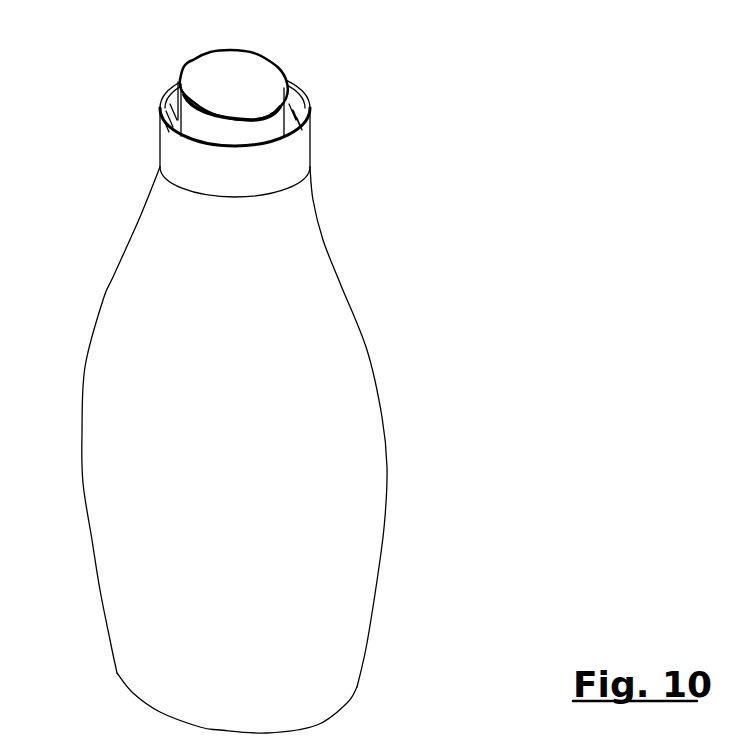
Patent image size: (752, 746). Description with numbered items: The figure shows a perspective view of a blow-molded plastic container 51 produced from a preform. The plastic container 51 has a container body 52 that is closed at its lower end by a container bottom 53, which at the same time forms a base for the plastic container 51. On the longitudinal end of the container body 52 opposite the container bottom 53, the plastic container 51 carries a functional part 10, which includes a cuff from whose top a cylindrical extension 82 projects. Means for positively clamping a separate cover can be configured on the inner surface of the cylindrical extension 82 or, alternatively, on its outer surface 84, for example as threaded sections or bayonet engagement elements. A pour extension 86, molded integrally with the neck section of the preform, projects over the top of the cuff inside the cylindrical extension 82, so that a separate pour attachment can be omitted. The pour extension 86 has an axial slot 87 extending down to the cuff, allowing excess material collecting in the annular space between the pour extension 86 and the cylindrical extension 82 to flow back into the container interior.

The functional part 10 is at (348, 366).
The plastic container 51 is at (348, 450).
The container body 52 is at (388, 490).
The container bottom 53 is at (170, 712).
The cylindrical extension 82 is at (238, 120).
The outer surface 84 is at (268, 170).
The pour extension 86 is at (247, 53).
The axial slot 87 is at (295, 73).